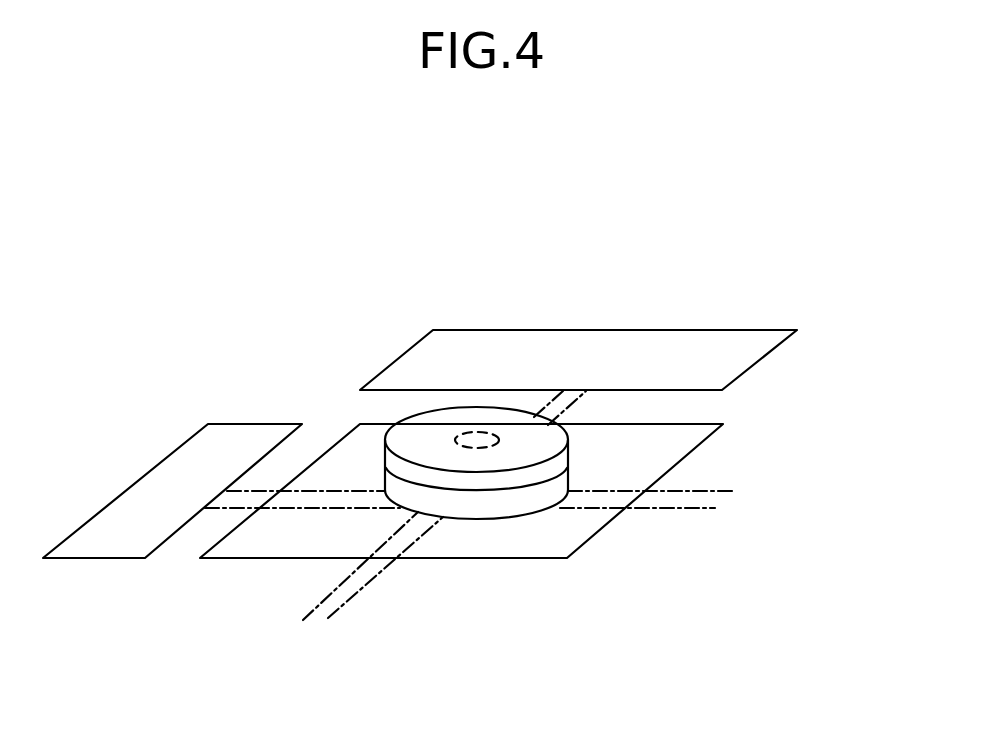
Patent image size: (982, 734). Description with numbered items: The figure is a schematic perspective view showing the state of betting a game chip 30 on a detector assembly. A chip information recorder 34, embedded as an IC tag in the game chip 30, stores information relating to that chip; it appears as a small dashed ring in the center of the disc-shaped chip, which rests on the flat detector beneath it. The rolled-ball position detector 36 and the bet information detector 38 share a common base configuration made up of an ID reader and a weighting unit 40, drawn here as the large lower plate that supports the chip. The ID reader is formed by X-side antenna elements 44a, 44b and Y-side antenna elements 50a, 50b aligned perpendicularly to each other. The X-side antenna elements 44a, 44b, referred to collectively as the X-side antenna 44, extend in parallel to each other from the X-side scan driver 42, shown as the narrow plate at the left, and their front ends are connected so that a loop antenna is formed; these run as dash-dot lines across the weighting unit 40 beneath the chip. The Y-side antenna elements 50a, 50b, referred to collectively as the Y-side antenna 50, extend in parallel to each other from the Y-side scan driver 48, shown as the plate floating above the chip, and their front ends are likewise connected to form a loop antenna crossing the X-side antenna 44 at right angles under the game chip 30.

The game chip 30 is at (568, 462).
The chip information recorder 34 is at (474, 432).
The rolled-ball position detector 36 is at (442, 467).
The bet information detector 38 is at (294, 300).
The weighting unit 40 is at (582, 552).
The X-side scan driver 42 is at (148, 471).
The X-side antenna 44 is at (772, 410).
The X-side antenna element 44a is at (703, 508).
The X-side antenna element 44b is at (712, 492).
The Y-side scan driver 48 is at (573, 329).
The Y-side antenna 50 is at (422, 663).
The Y-side antenna element 50a is at (350, 603).
The Y-side antenna element 50b is at (317, 607).